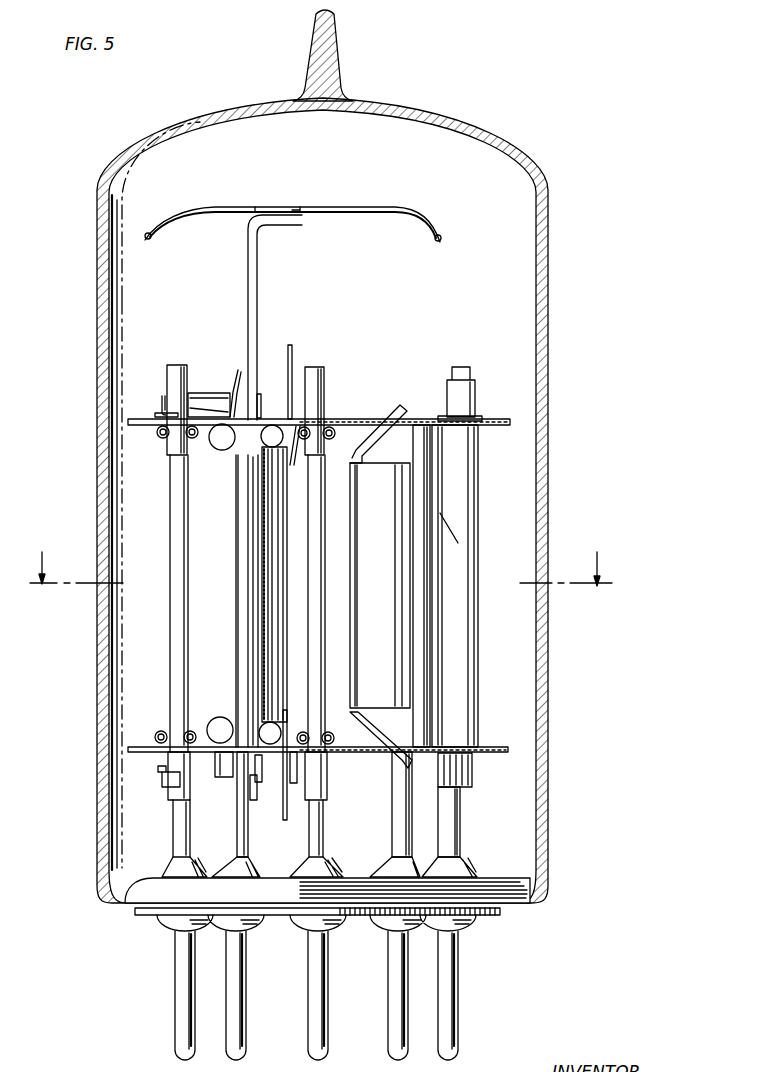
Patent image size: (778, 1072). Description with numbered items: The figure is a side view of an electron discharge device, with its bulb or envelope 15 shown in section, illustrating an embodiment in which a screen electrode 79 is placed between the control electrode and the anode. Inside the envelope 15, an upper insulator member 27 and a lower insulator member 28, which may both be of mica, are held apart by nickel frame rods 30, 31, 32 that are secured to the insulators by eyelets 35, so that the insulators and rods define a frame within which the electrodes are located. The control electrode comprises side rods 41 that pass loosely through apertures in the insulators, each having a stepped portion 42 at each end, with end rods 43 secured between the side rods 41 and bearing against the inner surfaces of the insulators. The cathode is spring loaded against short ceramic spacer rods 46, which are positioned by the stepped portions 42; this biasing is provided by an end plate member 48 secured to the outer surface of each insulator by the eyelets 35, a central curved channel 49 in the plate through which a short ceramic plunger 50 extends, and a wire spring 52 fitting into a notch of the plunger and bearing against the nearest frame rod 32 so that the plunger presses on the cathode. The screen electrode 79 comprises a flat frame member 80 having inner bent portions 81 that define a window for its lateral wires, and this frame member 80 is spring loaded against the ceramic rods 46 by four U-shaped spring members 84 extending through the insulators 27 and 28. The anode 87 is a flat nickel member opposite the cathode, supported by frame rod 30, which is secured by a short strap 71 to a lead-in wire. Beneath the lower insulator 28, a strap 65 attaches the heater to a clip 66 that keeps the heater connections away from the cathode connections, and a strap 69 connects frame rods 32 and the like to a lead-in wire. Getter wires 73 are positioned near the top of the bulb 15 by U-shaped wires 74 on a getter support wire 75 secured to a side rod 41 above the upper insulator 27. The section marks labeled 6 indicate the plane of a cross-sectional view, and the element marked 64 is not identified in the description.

The envelope 15 is at (550, 270).
The section line 6- 6 is at (321, 558).
The upper insulator member 27 is at (512, 423).
The lower insulator member 28 is at (488, 745).
The frame rod 30 is at (465, 367).
The frame rod 31 is at (326, 375).
The frame rod 32 is at (168, 512).
The eyelets 35 is at (158, 437).
The side rods 41 is at (236, 627).
The stepped portion 42 is at (262, 405).
The end rods 43 is at (222, 442).
The spacer rods 46 is at (268, 446).
The end plate member 48 is at (157, 412).
The central curved channel 49 is at (205, 392).
The ceramic plunger 50 is at (240, 378).
The wire springs 52 is at (163, 395).
The lead strip 64 is at (258, 780).
The strap 65 is at (257, 798).
The clip 66 is at (222, 777).
The strap 69 is at (162, 782).
The strap 71 is at (474, 770).
The getter wires 73 is at (150, 233).
The U-shaped wires 74 is at (302, 206).
The getter support wire 75 is at (259, 262).
The screen electrode 79 is at (340, 548).
The flat frame member 80 is at (283, 512).
The inner bent portions 81 is at (278, 578).
The U-shaped spring members 84 is at (292, 350).
The anode 87 is at (383, 706).